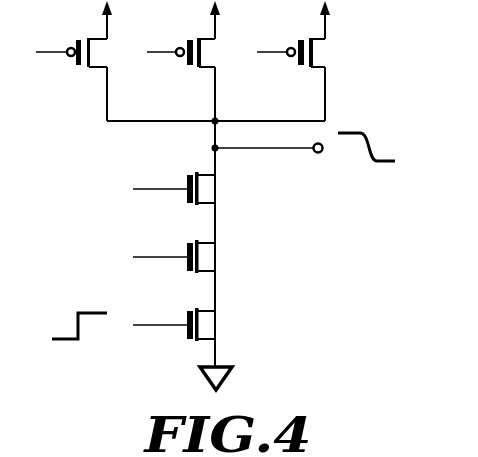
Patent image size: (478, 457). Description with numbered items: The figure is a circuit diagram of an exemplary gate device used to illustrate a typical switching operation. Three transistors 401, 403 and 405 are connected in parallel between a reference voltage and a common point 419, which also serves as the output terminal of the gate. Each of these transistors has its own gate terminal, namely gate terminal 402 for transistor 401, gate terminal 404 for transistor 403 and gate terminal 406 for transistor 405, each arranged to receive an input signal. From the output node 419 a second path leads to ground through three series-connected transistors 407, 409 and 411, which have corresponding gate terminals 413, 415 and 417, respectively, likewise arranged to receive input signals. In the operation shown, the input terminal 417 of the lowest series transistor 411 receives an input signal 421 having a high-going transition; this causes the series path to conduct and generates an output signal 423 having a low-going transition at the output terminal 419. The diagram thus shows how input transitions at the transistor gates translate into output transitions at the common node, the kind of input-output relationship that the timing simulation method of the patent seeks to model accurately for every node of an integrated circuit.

The transistor 401 is at (91, 76).
The gate terminal 402 is at (69, 47).
The transistor 403 is at (201, 76).
The gate terminal 404 is at (178, 47).
The transistor 405 is at (311, 76).
The gate terminal 406 is at (289, 47).
The transistor 407 is at (224, 190).
The transistor 409 is at (224, 259).
The transistor 411 is at (224, 327).
The gate terminal 413 is at (181, 182).
The gate terminal 415 is at (181, 249).
The gate terminal 417 is at (181, 317).
The common point 419 is at (318, 154).
The input signal 421 is at (67, 330).
The output signal 423 is at (383, 147).